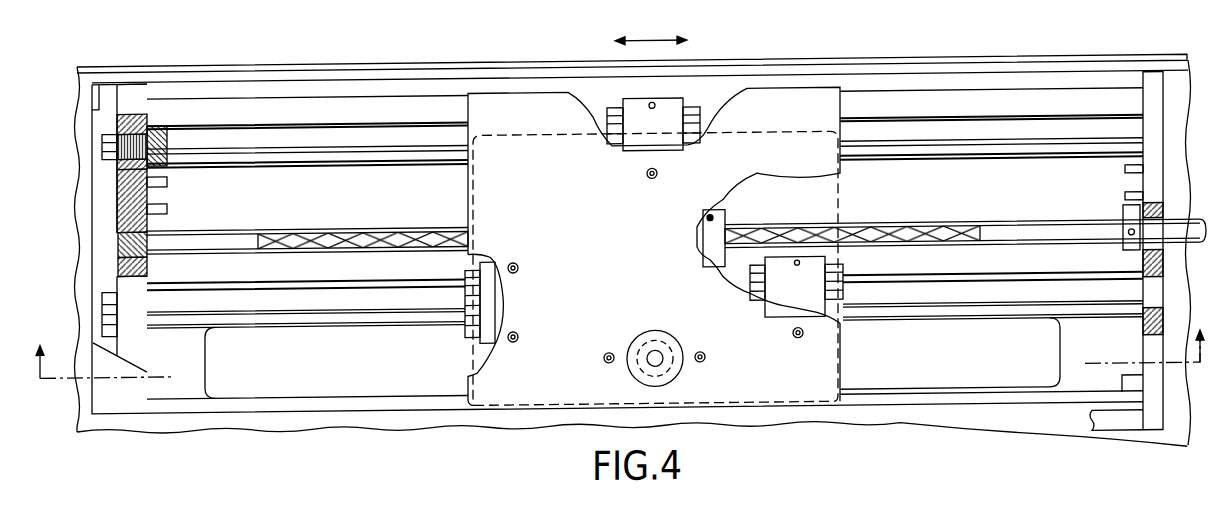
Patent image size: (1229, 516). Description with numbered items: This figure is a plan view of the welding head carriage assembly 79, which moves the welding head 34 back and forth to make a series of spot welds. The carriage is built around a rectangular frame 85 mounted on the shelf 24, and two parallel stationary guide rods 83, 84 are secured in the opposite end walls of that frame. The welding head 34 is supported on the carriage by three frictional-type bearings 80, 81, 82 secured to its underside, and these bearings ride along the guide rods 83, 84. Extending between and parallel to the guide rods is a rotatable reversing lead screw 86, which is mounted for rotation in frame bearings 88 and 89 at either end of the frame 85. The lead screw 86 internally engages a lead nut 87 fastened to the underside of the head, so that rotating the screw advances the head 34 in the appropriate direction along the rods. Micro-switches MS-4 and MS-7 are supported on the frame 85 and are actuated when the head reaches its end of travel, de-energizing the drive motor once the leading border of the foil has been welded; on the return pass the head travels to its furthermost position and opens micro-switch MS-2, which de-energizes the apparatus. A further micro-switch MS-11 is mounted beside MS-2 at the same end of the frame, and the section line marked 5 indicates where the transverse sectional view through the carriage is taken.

The carriage drive assembly 79 is at (1030, 54).
The rectangular frame 85 is at (192, 432).
The shelf 24 is at (322, 426).
The welding head 34 is at (780, 393).
The frictional-type bearing 82 is at (668, 153).
The lead nut 87 is at (726, 224).
The frictional-type bearing 80 is at (828, 269).
The frictional-type bearing 81 is at (465, 334).
The stationary guide rod 83 is at (300, 331).
The stationary guide rod 84 is at (935, 170).
The reversing lead screw 86 is at (880, 232).
The frame bearing 88 is at (150, 262).
The frame bearing 89 is at (1165, 250).
The micro-switch MS-4 is at (172, 184).
The micro-switch MS-7 is at (172, 210).
The micro-switch MS-2 is at (1118, 181).
The microswitch MS-11 is at (1118, 208).
The section line 5- 5 is at (620, 342).